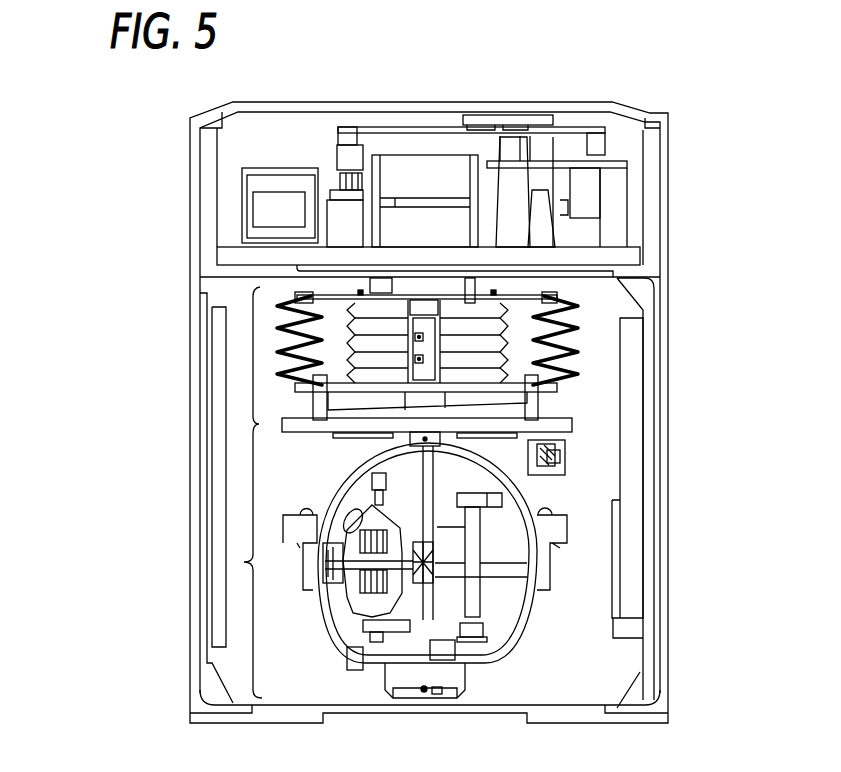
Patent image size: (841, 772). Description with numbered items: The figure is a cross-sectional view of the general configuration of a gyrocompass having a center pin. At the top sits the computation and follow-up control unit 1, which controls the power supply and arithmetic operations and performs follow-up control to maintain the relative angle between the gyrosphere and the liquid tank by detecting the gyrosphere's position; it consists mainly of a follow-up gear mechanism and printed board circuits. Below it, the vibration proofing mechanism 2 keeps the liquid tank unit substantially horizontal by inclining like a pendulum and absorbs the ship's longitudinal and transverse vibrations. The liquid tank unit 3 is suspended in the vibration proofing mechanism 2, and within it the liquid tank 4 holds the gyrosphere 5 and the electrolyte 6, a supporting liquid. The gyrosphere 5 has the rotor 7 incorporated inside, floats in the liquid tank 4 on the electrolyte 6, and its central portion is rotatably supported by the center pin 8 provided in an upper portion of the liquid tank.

The computation and follow-up control unit 1 is at (180, 100).
The vibration proofing mechanism 2 is at (251, 357).
The liquid tank unit 3 is at (251, 561).
The liquid tank 4 is at (540, 573).
The gyrosphere 5 is at (495, 613).
The electrolyte 6 is at (438, 502).
The rotor 7 is at (378, 518).
The center pin 8 is at (432, 462).